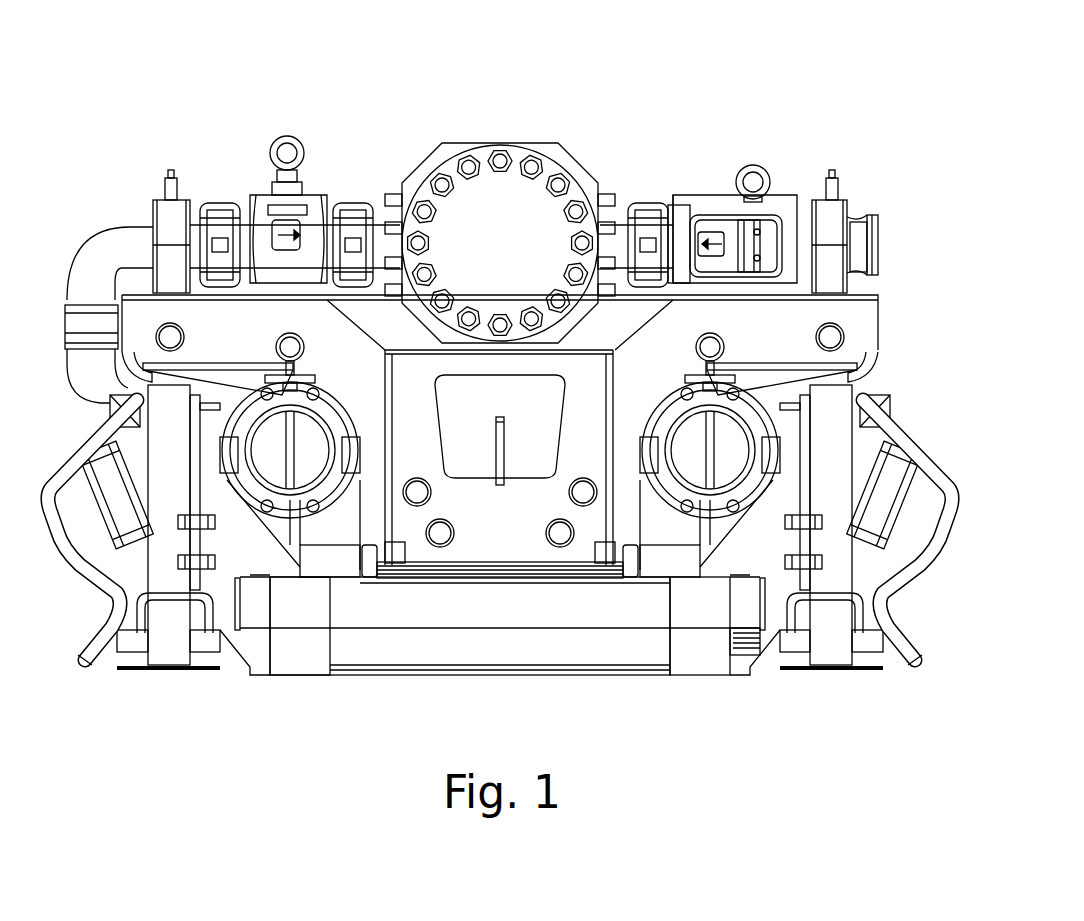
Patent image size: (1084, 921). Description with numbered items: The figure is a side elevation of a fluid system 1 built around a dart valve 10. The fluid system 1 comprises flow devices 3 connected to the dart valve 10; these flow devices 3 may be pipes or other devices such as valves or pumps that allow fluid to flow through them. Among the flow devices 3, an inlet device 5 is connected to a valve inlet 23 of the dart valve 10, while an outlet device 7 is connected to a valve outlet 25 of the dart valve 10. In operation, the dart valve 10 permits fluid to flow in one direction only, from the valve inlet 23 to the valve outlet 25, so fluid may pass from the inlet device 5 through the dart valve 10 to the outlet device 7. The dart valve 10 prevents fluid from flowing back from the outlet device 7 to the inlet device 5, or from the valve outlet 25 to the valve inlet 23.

The fluid system 1 is at (500, 485).
The flow devices 3 is at (120, 232).
The outlet device 7 is at (645, 200).
The valve outlet 25 is at (670, 217).
The dart valve 10 is at (751, 148).
The valve inlet 23 is at (810, 213).
The inlet device 5 is at (883, 230).